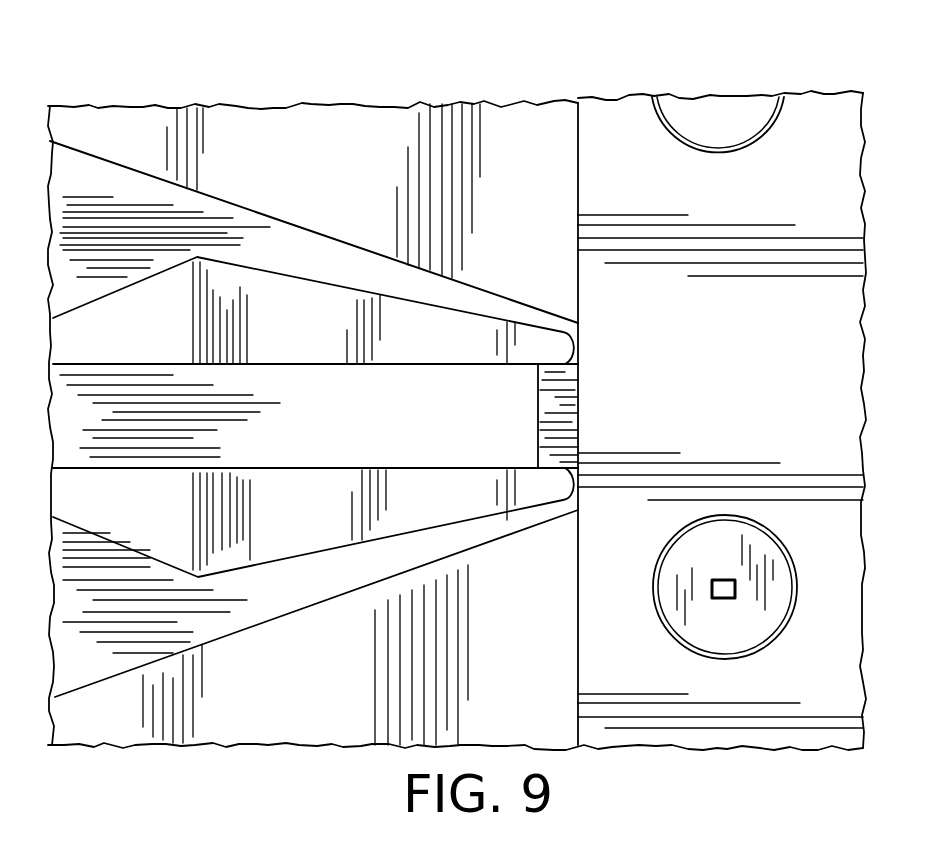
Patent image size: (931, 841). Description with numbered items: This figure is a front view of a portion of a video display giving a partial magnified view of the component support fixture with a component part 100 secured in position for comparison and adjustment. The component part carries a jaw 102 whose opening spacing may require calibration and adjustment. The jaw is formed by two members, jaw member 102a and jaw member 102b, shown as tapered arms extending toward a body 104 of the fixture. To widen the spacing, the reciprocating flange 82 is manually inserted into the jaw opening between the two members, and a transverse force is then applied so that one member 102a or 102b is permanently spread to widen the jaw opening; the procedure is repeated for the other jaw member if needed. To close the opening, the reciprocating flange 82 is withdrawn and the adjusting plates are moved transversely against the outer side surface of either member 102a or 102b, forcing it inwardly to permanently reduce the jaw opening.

The connector assembly 100 is at (328, 88).
The jaw 102 is at (307, 515).
The jaw member 102a is at (152, 518).
The jaw member 102b is at (153, 350).
The reciprocating flange 82 is at (541, 413).
The housing body 104 is at (752, 388).